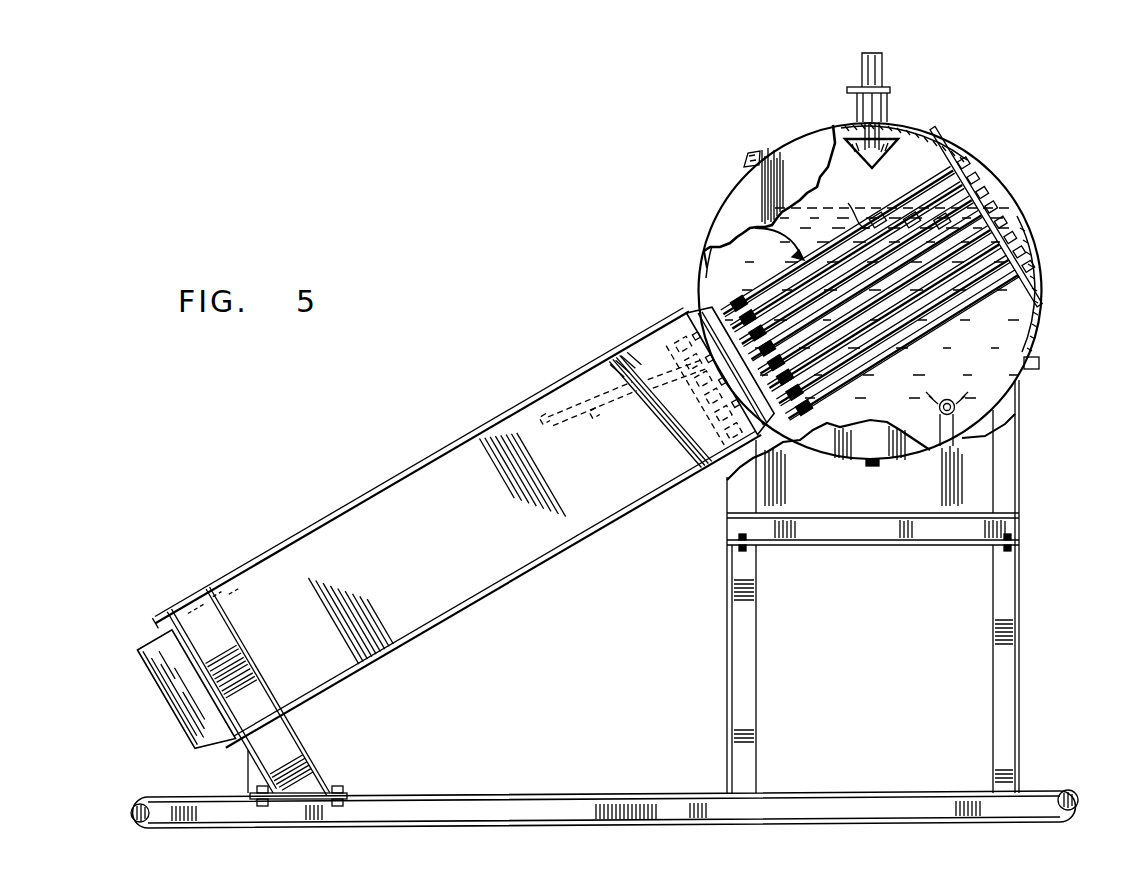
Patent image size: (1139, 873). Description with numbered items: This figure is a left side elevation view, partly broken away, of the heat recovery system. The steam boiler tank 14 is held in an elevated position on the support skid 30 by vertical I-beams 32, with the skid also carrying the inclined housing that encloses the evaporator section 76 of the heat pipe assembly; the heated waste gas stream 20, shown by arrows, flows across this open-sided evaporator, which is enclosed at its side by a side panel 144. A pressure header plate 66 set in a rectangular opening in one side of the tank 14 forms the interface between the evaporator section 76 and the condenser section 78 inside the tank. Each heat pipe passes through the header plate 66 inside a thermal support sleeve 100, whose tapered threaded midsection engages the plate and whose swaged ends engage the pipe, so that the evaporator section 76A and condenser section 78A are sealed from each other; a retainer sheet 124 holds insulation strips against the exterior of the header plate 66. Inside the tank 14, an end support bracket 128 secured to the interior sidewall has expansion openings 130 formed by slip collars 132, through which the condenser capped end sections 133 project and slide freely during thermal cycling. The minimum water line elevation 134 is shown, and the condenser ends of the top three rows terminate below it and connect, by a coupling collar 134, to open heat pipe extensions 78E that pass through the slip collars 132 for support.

The steam boiler tank 14 is at (1047, 319).
The heated waste gas stream 20 is at (423, 443).
The support skid 30 is at (1040, 792).
The vertical I-beams 32 is at (1018, 706).
The pressure header plate 66 is at (690, 312).
The evaporator section 76 is at (417, 559).
The evaporator section of heat pipe 76A is at (630, 405).
The condenser section 78 is at (757, 223).
The condenser section of heat pipe 78A is at (1061, 244).
The open heat pipe extension 78E is at (936, 222).
The thermal support sleeve 100 is at (713, 293).
The retainer sheet 124 is at (688, 453).
The end support bracket 128 is at (1018, 287).
The expansion openings 130 is at (958, 183).
The slip collar 132 is at (977, 182).
The condenser capped end sections 133 is at (968, 165).
The minimum water line elevation 134 is at (875, 218).
The side panel 144 is at (443, 600).